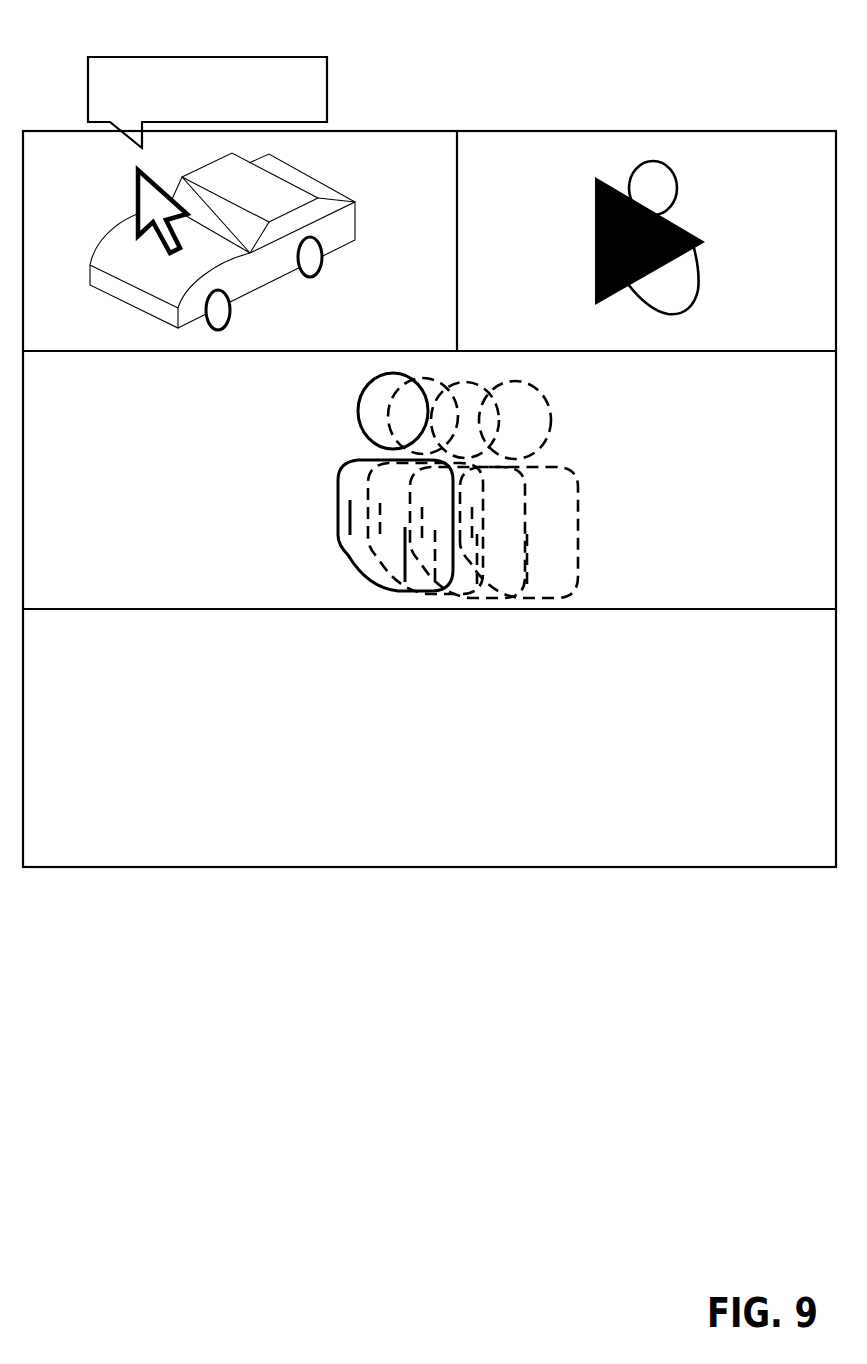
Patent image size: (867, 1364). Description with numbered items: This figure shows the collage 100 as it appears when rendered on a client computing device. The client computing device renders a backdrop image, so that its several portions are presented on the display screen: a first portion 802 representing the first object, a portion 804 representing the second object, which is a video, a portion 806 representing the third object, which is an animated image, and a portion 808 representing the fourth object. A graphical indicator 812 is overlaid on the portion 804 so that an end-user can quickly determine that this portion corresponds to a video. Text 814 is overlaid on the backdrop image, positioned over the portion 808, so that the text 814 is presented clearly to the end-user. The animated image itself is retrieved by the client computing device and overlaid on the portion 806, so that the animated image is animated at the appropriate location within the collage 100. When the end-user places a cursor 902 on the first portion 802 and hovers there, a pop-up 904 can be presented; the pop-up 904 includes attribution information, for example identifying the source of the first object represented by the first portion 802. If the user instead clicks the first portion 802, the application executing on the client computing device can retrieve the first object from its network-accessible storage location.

The collage 100 is at (697, 82).
The first portion 802 is at (411, 326).
The portion representative of the second object 804 is at (780, 326).
The portion representative of the animated image 806 is at (780, 585).
The portion of the backdrop image 808 is at (764, 842).
The graphical indicator 812 is at (595, 232).
The text 814 is at (252, 818).
The cursor 902 is at (138, 192).
The pop-up 904 is at (170, 57).